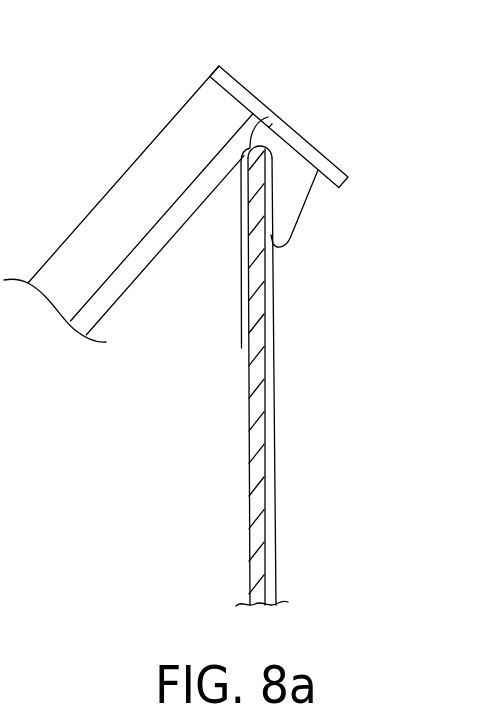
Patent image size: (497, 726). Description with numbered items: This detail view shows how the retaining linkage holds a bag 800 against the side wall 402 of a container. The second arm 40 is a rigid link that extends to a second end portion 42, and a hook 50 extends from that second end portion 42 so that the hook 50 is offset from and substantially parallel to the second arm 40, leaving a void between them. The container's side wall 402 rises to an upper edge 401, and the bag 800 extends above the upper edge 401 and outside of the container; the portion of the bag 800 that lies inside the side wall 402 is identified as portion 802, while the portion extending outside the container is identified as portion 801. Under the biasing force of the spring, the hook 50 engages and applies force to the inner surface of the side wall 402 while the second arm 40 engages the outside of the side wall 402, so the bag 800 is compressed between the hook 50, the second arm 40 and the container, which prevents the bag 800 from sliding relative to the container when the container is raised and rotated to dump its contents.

The second arm 40 is at (106, 207).
The second end portion 42 is at (208, 78).
The upper edge 401 is at (260, 120).
The side wall 402 is at (257, 517).
The hook 50 is at (310, 210).
The bag 800 is at (260, 376).
The portion of the bag extending outside the container 801 is at (242, 296).
The portion of the bag within the side walls 802 is at (275, 462).